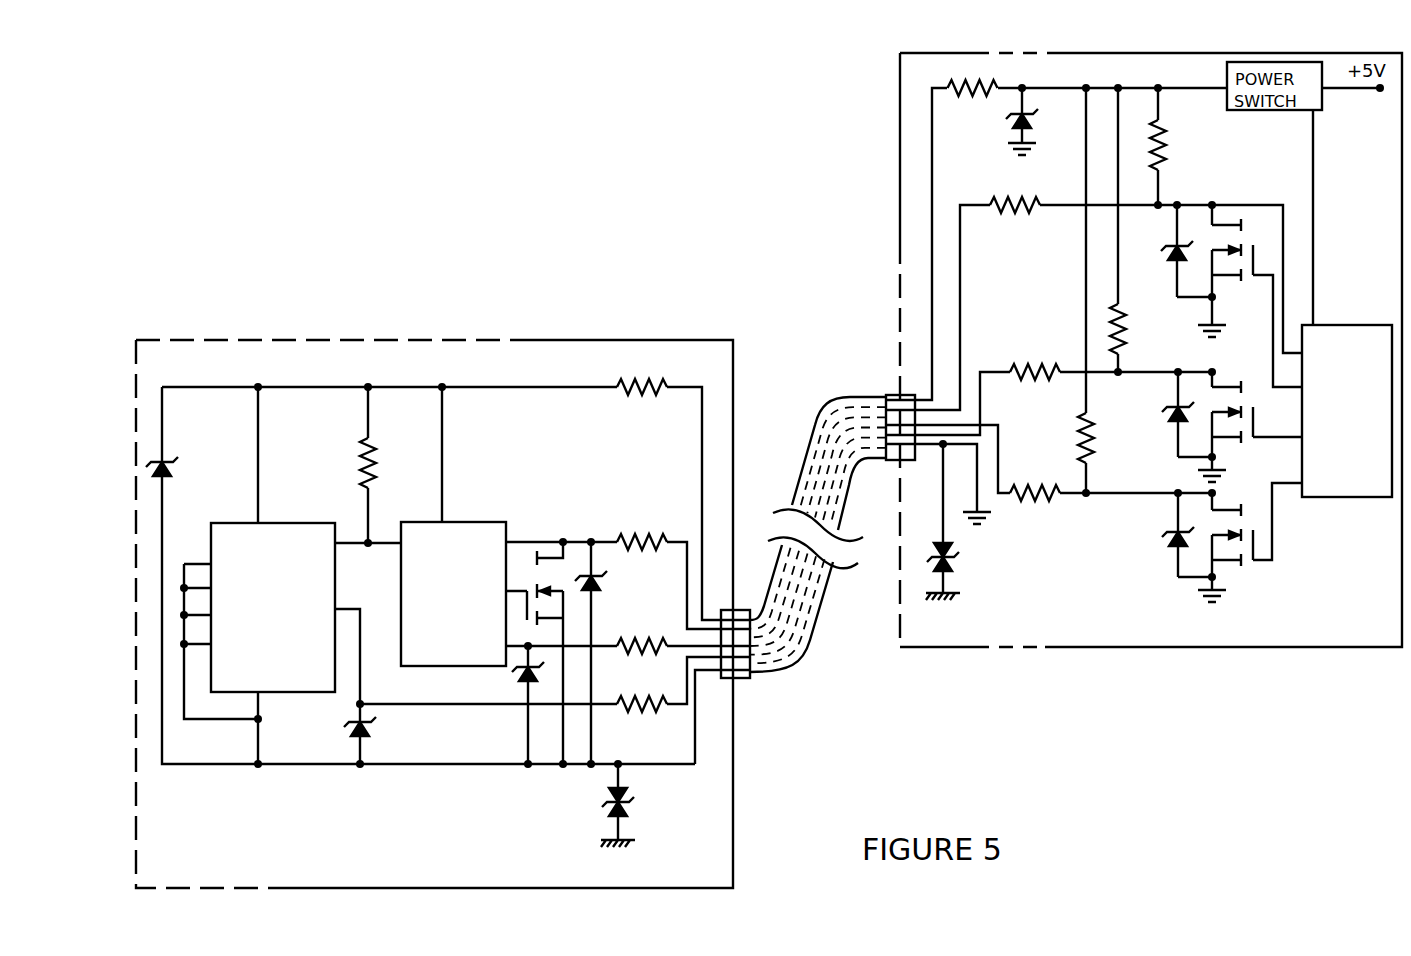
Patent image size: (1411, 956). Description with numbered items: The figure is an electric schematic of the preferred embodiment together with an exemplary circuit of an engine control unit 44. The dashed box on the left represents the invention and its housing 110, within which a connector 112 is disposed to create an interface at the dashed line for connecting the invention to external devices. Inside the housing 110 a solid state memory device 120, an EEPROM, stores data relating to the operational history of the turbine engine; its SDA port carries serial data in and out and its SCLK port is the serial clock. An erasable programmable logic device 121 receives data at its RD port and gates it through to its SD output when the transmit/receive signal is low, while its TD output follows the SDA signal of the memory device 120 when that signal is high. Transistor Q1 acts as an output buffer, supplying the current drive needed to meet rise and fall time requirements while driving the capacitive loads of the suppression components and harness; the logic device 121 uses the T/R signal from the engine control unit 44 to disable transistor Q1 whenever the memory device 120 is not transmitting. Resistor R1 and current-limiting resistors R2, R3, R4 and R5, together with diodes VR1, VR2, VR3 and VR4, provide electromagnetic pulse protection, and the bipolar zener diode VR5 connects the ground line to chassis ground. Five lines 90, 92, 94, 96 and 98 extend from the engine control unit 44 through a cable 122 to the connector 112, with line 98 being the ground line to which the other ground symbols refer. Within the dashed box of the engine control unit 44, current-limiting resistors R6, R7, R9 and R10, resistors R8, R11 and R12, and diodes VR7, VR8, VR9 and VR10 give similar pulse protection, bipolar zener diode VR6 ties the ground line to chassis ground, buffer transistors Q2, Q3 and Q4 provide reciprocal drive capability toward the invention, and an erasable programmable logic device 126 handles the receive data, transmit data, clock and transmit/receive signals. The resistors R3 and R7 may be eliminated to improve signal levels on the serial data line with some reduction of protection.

The engine control unit 44 is at (1073, 648).
The communication line 90 is at (507, 386).
The communication line 92 is at (832, 435).
The communication line 94 is at (832, 475).
The communication line 96 is at (680, 708).
The ground line 98 is at (689, 768).
The housing 110 is at (735, 354).
The connector 112 is at (727, 682).
The solid state memory device 120 is at (300, 521).
The erasable programmable logic device 121 is at (455, 520).
The cable 122 is at (832, 580).
The erasable programmable logic device 126 is at (1333, 322).
The resistor R1 is at (374, 452).
The resistor R2 is at (645, 378).
The resistor R3 is at (627, 534).
The resistor R4 is at (642, 643).
The resistor R5 is at (637, 702).
The resistor R6 is at (975, 83).
The resistor R7 is at (1000, 200).
The resistor R8 is at (1168, 146).
The resistor R9 is at (1018, 362).
The resistor R10 is at (1037, 502).
The resistor R11 is at (1092, 414).
The resistor R12 is at (1124, 327).
The diode VR1 is at (170, 460).
The diode VR2 is at (347, 726).
The diode VR3 is at (606, 578).
The diode VR4 is at (515, 672).
The bipolar zener diode VR5 is at (604, 812).
The bipolar zener diode VR6 is at (958, 562).
The diode VR7 is at (1162, 537).
The diode VR8 is at (1162, 415).
The diode VR9 is at (1170, 250).
The diode VR10 is at (1040, 113).
The transistor Q1 is at (532, 584).
The transistor Q2 is at (1244, 241).
The transistor Q3 is at (1247, 436).
The transistor Q4 is at (1247, 563).